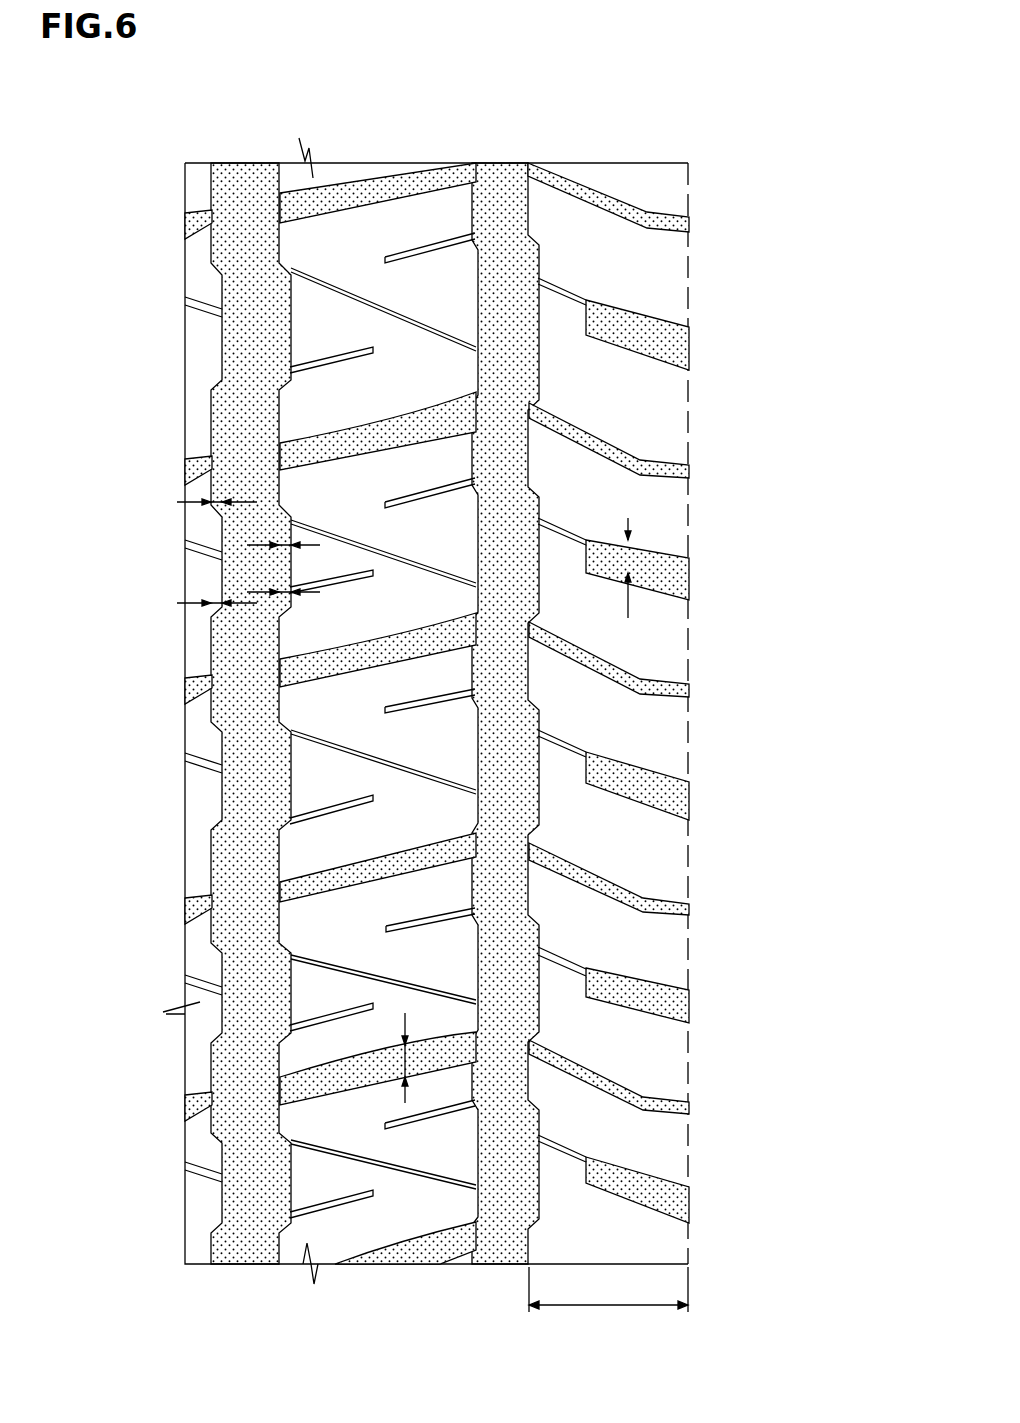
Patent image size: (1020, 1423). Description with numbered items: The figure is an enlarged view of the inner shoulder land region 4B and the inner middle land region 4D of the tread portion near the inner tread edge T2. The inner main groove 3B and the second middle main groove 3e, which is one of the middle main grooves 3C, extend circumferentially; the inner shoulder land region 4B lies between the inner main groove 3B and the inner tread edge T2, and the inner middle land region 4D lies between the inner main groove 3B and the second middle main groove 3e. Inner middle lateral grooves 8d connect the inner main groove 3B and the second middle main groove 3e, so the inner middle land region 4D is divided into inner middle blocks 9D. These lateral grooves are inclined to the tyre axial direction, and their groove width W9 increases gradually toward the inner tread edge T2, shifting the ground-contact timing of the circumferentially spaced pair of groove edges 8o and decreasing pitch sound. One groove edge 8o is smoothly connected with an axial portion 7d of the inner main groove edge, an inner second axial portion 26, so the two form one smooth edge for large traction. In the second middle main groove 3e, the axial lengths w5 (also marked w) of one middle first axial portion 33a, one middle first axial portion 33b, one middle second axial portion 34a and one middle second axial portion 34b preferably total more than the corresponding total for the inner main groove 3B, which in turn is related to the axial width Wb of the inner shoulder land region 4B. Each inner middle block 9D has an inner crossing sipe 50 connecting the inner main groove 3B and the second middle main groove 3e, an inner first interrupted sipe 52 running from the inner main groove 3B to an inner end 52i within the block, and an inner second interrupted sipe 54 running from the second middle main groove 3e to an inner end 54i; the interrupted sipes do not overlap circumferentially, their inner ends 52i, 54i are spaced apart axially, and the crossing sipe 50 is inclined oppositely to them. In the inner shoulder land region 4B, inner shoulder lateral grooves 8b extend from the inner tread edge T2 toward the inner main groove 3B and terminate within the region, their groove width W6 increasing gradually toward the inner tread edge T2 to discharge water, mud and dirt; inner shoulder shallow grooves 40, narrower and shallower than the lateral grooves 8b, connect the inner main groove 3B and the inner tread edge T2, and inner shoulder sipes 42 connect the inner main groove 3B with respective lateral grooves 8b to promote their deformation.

The middle main groove 3C is at (240, 198).
The second middle main groove 3e is at (259, 681).
The inner middle land region 4D is at (377, 232).
The inner middle block 9D is at (378, 681).
The inner main groove 3B is at (499, 218).
The inner shoulder land region 4B is at (587, 228).
The inner tread edge T2 is at (690, 196).
The inner shoulder lateral groove 8b is at (668, 346).
The inner shoulder shallow groove 40 is at (625, 456).
The inner shoulder sipe 42 is at (565, 530).
The groove width W6 is at (630, 558).
The axial length w5 is at (212, 498).
The zigzag amplitude w is at (275, 546).
The middle first axial portion 33a is at (222, 690).
The middle second axial portion 34b is at (228, 738).
The middle first axial portion 33b is at (290, 827).
The middle second axial portion 34a is at (233, 811).
The groove edge 8o is at (400, 858).
The axial portion 7d is at (440, 838).
The inner second axial portion 26 is at (563, 728).
The inner end 52i is at (383, 918).
The inner first interrupted sipe 52 is at (473, 948).
The inner crossing sipe 50 is at (390, 995).
The inner second interrupted sipe 54 is at (345, 1018).
The inner end 54i is at (470, 1035).
The groove width W9 is at (405, 1013).
The inner middle lateral groove 8d is at (590, 1127).
The width of inner shoulder land region Wb is at (608, 1305).